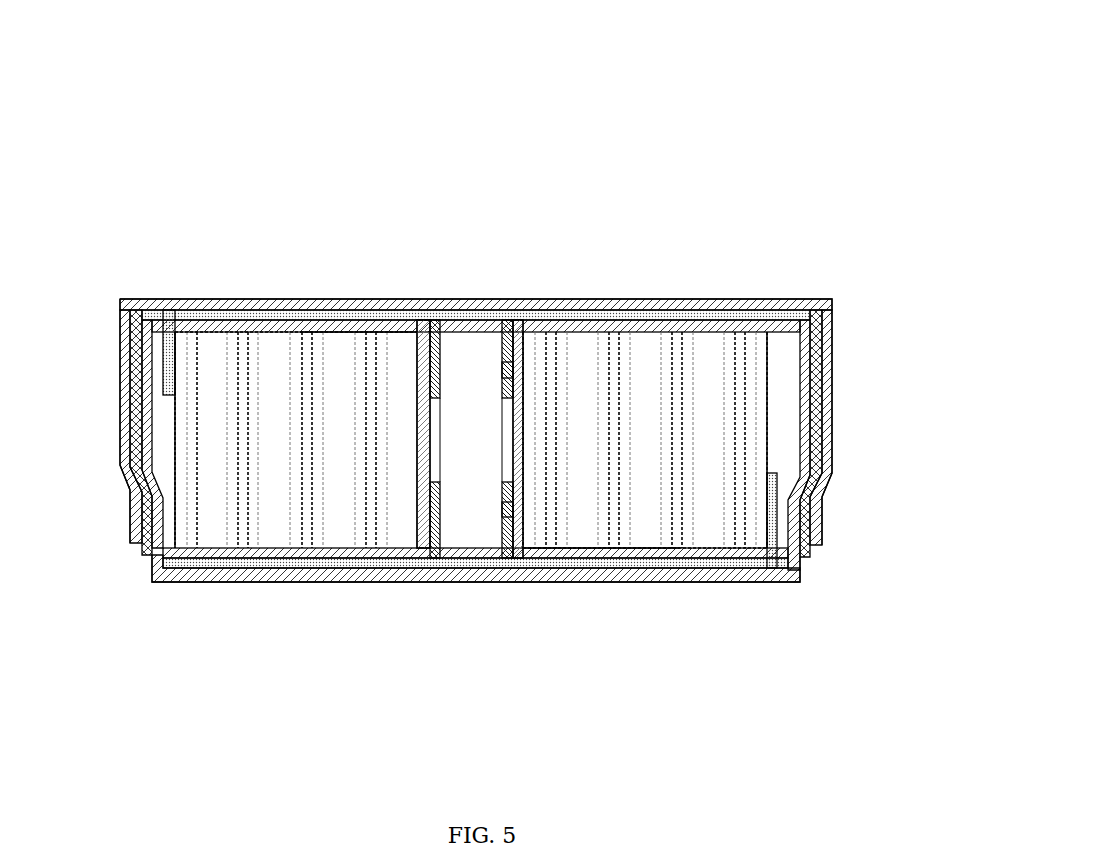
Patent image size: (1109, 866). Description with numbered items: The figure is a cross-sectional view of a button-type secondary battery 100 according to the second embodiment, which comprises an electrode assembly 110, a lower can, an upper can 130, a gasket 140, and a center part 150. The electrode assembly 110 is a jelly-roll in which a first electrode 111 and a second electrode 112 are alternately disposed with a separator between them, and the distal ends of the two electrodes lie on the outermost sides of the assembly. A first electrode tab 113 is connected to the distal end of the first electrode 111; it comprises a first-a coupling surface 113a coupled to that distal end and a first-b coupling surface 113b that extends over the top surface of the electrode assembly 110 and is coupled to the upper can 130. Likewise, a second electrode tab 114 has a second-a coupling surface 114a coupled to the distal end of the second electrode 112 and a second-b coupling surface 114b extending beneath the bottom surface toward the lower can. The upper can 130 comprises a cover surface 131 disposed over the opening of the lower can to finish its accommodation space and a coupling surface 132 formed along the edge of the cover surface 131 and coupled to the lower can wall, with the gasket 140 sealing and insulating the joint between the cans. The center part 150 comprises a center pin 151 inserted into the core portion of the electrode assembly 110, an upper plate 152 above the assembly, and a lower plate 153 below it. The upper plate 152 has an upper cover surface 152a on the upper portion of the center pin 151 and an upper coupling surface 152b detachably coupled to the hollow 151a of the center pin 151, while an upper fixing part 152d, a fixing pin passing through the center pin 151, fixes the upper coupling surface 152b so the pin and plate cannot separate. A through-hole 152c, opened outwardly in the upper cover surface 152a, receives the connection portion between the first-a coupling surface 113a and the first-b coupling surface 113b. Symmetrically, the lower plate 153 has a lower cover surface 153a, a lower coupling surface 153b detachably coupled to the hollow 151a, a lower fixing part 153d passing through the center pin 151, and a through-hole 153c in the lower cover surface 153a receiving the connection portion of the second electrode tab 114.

The secondary battery 100 is at (720, 132).
The electrode assembly 110 is at (482, 437).
The first electrode 111 is at (175, 512).
The second electrode 112 is at (765, 455).
The first electrode tab 113 is at (295, 368).
The first-a coupling surface 113a is at (173, 362).
The first-b coupling surface 113b is at (358, 288).
The second electrode tab 114 is at (645, 509).
The second-a coupling surface 114a is at (768, 518).
The second-b coupling surface 114b is at (601, 596).
The upper can 130 is at (447, 381).
The cover surface 131 is at (722, 305).
The coupling surface 132 is at (723, 234).
The gasket 140 is at (132, 373).
The center part 150 is at (526, 462).
The center pin 151 is at (436, 432).
The hollow 151a is at (479, 429).
The upper plate 152 is at (533, 356).
The upper cover surface 152a is at (397, 327).
The upper coupling surface 152b is at (432, 367).
The through-hole 152c is at (165, 313).
The upper fixing part 152d is at (513, 368).
The lower plate 153 is at (536, 512).
The lower cover surface 153a is at (532, 553).
The lower coupling surface 153b is at (450, 548).
The through-hole 153c is at (772, 565).
The lower fixing part 153d is at (517, 508).